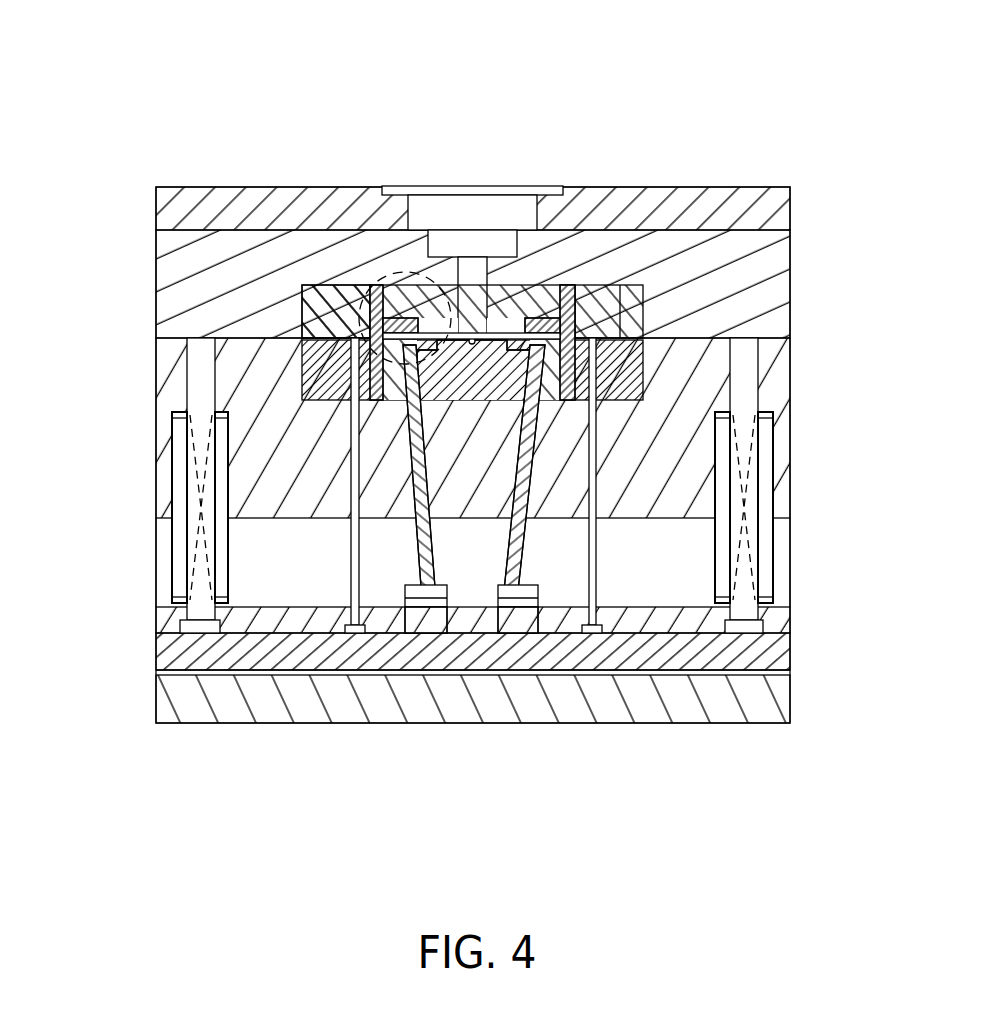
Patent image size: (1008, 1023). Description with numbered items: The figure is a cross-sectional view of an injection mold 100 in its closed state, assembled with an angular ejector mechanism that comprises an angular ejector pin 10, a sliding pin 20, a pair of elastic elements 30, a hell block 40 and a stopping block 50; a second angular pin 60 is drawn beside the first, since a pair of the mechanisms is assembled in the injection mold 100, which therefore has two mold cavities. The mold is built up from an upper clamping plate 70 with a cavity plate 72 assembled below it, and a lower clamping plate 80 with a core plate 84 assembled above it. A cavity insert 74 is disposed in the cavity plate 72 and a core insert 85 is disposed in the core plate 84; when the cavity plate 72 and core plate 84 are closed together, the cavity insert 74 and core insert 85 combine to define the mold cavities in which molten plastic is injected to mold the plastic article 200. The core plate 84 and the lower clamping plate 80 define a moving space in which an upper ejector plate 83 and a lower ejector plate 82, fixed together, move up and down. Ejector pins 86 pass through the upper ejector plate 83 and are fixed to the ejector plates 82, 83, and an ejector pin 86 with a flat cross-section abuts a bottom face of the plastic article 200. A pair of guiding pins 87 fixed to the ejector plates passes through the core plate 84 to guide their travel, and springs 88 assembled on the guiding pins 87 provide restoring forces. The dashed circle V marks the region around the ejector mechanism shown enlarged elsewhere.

The injection mold 100 is at (122, 46).
The angular ejector pin 10 is at (413, 562).
The sliding pin 20 is at (512, 318).
The elastic element 30 is at (537, 318).
The hell block 40 is at (405, 300).
The stopping block 50 is at (353, 312).
The second ejector pin 60 is at (540, 600).
The upper clamping plate 70 is at (792, 190).
The cavity plate 72 is at (753, 278).
The cavity insert 74 is at (620, 297).
The lower clamping plate 80 is at (764, 733).
The lower ejector plate 82 is at (767, 658).
The upper ejector plate 83 is at (780, 622).
The core plate 84 is at (780, 425).
The core insert 85 is at (615, 380).
The ejector pin 86 is at (353, 573).
The guiding pin 87 is at (197, 398).
The spring 88 is at (178, 538).
The plastic article 200 is at (447, 318).
The enlarged region V is at (367, 272).